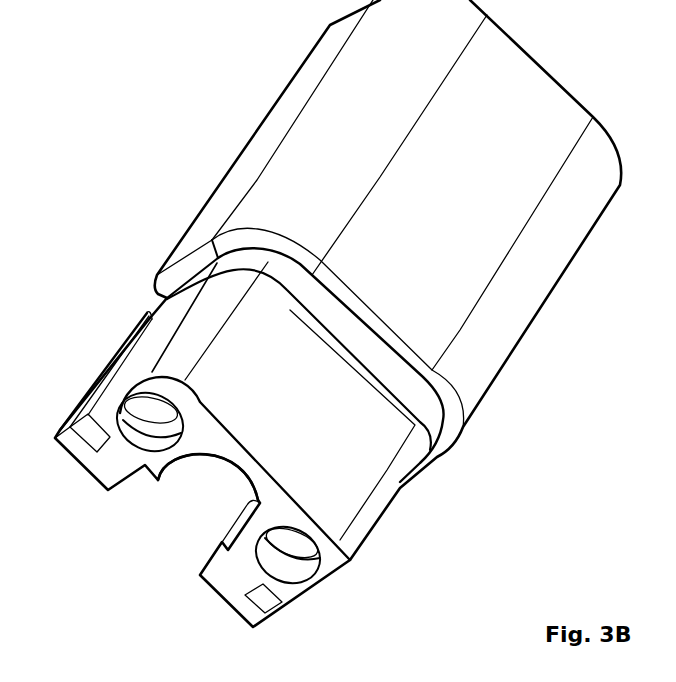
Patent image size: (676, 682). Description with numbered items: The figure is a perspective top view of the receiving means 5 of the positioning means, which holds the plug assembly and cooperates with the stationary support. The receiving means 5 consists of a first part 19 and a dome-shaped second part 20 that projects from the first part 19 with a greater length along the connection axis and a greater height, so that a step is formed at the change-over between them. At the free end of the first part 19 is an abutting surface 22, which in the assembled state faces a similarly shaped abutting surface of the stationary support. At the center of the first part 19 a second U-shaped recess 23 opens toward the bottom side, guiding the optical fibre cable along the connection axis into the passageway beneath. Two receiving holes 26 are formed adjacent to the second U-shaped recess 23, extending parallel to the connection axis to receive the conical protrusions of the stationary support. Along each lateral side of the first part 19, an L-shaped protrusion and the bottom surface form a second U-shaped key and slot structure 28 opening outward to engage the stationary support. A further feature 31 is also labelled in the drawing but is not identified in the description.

The receiving means 5 is at (244, 56).
The first part 19 is at (398, 518).
The second part 20 is at (588, 263).
The abutting surface 22 is at (103, 466).
The second U-shaped recess 23 is at (198, 492).
The receiving holes 26 is at (124, 411).
The second U-shaped key and slot structure 28 is at (82, 410).
The countersink 31 is at (150, 400).